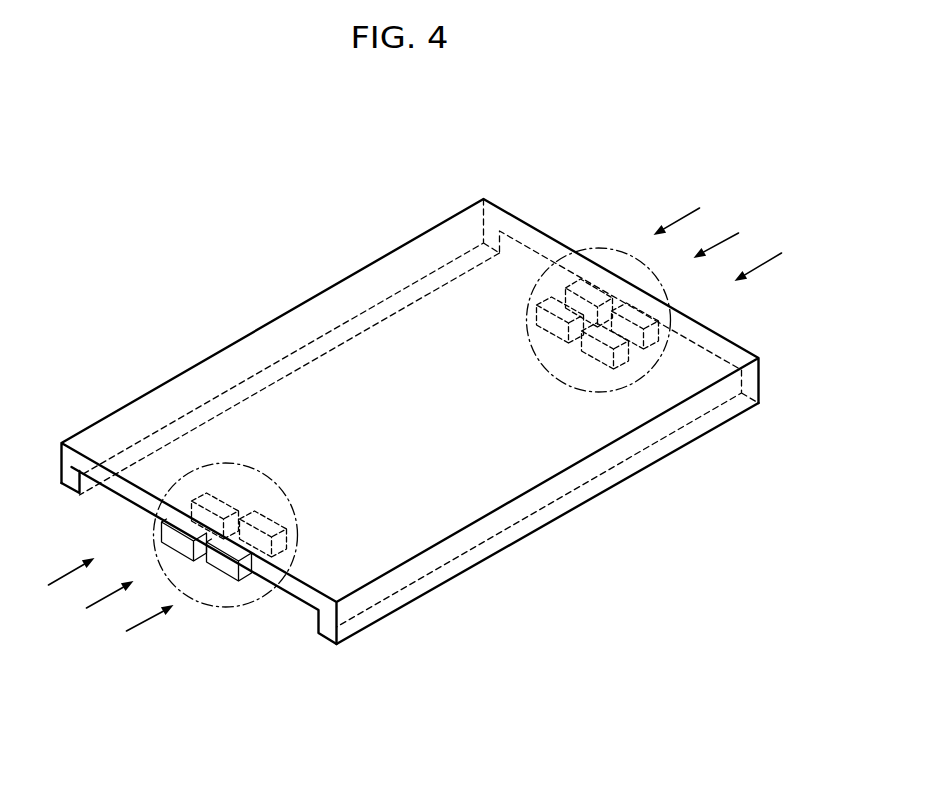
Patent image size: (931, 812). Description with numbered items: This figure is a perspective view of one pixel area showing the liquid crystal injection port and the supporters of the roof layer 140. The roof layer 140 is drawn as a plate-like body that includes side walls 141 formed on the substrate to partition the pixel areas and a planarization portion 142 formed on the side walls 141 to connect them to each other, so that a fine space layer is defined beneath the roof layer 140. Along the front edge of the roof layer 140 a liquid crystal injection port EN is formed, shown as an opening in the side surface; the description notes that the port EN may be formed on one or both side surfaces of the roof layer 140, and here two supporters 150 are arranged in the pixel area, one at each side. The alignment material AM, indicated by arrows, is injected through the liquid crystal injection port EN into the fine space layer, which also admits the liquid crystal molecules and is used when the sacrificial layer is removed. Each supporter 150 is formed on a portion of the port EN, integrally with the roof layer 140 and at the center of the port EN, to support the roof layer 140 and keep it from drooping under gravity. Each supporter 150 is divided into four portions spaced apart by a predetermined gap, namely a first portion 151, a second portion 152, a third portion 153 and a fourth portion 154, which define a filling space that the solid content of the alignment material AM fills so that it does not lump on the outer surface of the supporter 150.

The roof layer 140 is at (410, 421).
The side walls 141 is at (535, 518).
The planarization portion 142 is at (530, 460).
The supporter 150 is at (222, 460).
The first portion 151 is at (183, 548).
The second portion 152 is at (203, 495).
The third portion 153 is at (283, 558).
The fourth portion 154 is at (228, 567).
The liquid crystal injection port EN is at (116, 489).
The alignment material AM is at (412, 417).